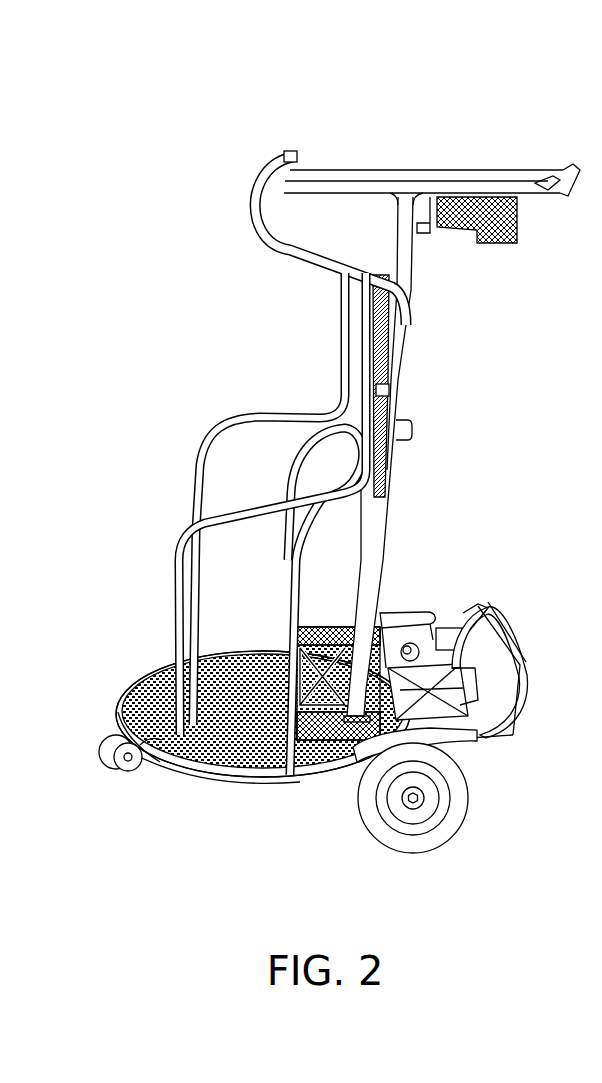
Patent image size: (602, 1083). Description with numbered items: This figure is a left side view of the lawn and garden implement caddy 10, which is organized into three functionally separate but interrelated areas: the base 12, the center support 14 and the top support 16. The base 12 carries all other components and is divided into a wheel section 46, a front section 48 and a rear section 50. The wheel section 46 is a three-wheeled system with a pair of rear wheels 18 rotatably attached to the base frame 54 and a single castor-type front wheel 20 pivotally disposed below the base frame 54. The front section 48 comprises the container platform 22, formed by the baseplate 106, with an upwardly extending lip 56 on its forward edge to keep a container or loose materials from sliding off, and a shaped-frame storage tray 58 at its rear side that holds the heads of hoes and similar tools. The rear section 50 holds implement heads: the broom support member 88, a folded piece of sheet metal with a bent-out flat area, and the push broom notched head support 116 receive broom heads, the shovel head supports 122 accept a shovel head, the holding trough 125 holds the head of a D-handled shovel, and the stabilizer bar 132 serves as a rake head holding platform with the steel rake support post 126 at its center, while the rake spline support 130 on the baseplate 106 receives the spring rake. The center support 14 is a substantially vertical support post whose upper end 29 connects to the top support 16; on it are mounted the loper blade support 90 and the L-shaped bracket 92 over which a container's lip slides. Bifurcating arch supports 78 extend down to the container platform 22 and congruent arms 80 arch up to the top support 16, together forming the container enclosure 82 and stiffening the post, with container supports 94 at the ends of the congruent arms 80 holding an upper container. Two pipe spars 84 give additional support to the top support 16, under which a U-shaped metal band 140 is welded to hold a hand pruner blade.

The lawn and garden implement caddy 10 is at (190, 170).
The base 12 is at (533, 721).
The center support 14 is at (472, 391).
The top support 16 is at (233, 232).
The rear wheels 18 is at (373, 820).
The front wheel 20 is at (118, 766).
The container platform 22 is at (120, 700).
The upper end 29 is at (470, 316).
The wheel section 46 is at (236, 799).
The front section 48 is at (239, 726).
The rear section 50 is at (458, 572).
The base frame 54 is at (480, 752).
The lip 56 is at (125, 681).
The storage tray 58 is at (320, 777).
The arch supports 78 is at (178, 544).
The congruent arms 80 is at (292, 268).
The container enclosure 82 is at (188, 414).
The pipe spars 84 is at (343, 362).
The broom support member 88 is at (420, 610).
The loper blade support 90 is at (413, 432).
The bracket 92 is at (385, 390).
The container supports 94 is at (292, 150).
The baseplate 106 is at (190, 777).
The push broom notched head support 116 is at (445, 592).
The shovel head supports 122 is at (475, 650).
The holding trough 125 is at (470, 612).
The steel rake support post 126 is at (512, 728).
The rake spline support 130 is at (525, 703).
The stabilizer bar 132 is at (513, 653).
The metal band 140 is at (427, 223).